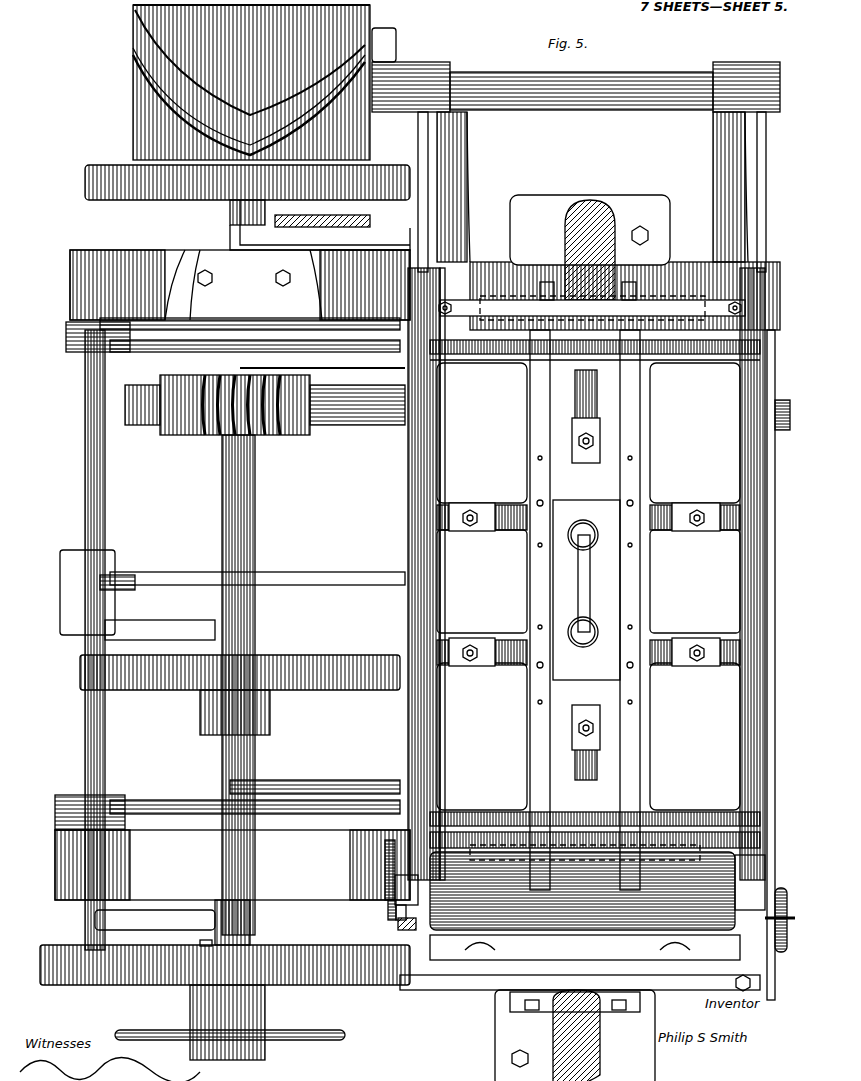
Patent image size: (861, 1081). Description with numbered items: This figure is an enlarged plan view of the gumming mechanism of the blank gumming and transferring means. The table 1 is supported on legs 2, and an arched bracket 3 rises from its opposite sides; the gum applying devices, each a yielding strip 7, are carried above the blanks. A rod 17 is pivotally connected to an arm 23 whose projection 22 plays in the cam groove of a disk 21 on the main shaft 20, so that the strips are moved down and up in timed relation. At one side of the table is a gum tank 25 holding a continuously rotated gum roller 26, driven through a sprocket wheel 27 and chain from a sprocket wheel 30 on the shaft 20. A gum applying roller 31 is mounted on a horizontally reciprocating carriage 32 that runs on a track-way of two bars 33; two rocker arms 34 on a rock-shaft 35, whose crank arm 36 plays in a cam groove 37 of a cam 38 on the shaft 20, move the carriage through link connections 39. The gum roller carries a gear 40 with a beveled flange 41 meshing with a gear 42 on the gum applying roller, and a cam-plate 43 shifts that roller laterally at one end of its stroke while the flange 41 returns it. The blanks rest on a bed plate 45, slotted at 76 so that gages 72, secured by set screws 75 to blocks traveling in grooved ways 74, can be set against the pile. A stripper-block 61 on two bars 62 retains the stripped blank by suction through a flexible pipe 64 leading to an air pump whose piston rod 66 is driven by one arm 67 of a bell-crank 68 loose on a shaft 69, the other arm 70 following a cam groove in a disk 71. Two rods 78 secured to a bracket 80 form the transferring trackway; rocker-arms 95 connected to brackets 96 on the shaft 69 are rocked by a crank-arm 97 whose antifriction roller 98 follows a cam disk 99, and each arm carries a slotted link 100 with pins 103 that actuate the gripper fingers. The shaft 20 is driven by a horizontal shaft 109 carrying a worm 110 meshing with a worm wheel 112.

The table 1 is at (480, 262).
The legs 2 is at (155, 262).
The arched bracket 3 is at (590, 205).
The yielding strip 7 is at (775, 788).
The rod 17 is at (368, 218).
The shaft 20 is at (255, 530).
The disk 21 is at (86, 188).
The projection 22 is at (232, 216).
The arm 23 is at (320, 225).
The gum tank 25 is at (396, 915).
The gum roller 26 is at (545, 935).
The sprocket wheel 27 is at (782, 888).
The sprocket wheel 30 is at (340, 1032).
The gum applying roller 31 is at (582, 886).
The carriage 32 is at (398, 905).
The bars 33 is at (408, 548).
The rocker arms 34 is at (418, 158).
The rock-shaft 35 is at (575, 80).
The crank arm 36 is at (398, 48).
The cam groove 37 is at (249, 101).
The cam 38 is at (251, 82).
The link connections 39 is at (407, 745).
The gear 40 is at (388, 910).
The beveled flange 41 is at (397, 934).
The gear 42 is at (385, 850).
The cam-plate 43 is at (395, 369).
The bed plate 45 is at (588, 586).
The stripper-block 61 is at (586, 590).
The bars 62 is at (632, 455).
The flexible pipe 64 is at (590, 515).
The piston rod 66 is at (305, 572).
The arm 67 is at (135, 585).
The bell-crank 68 is at (110, 612).
The shaft 69 is at (105, 535).
The arm 70 is at (180, 620).
The disk 71 is at (278, 655).
The gages 72 is at (584, 586).
The grooved ways 74 is at (614, 579).
The set screws 75 is at (582, 584).
The slots 76 is at (585, 617).
The rods 78 is at (508, 360).
The bracket 80 is at (258, 340).
The rocker-arms 95 is at (210, 318).
The brackets 96 is at (66, 338).
The crank-arm 97 is at (140, 930).
The antifriction roller 98 is at (191, 941).
The disk 99 is at (225, 1002).
The link 100 is at (588, 318).
The pins 103 is at (786, 390).
The horizontal shaft 109 is at (365, 415).
The worm 110 is at (210, 435).
The worm wheel 112 is at (140, 425).